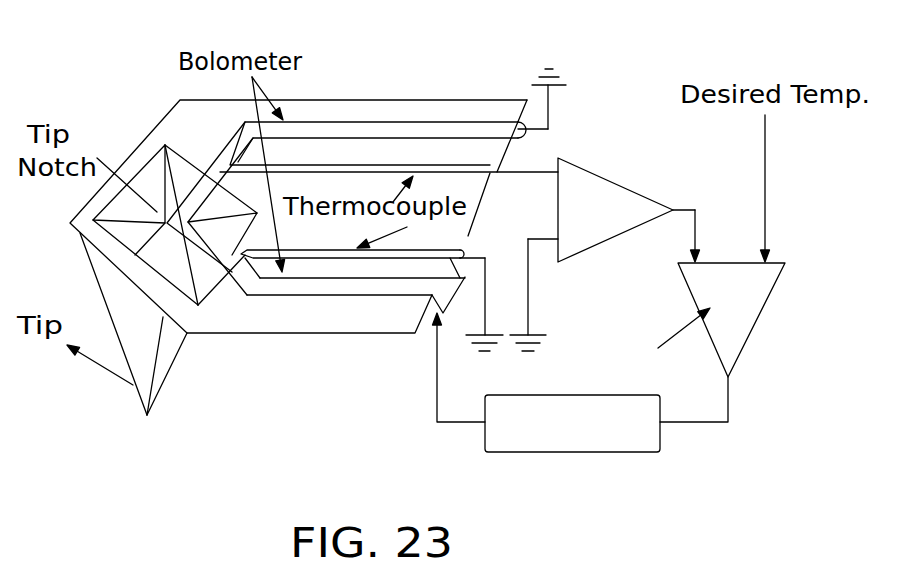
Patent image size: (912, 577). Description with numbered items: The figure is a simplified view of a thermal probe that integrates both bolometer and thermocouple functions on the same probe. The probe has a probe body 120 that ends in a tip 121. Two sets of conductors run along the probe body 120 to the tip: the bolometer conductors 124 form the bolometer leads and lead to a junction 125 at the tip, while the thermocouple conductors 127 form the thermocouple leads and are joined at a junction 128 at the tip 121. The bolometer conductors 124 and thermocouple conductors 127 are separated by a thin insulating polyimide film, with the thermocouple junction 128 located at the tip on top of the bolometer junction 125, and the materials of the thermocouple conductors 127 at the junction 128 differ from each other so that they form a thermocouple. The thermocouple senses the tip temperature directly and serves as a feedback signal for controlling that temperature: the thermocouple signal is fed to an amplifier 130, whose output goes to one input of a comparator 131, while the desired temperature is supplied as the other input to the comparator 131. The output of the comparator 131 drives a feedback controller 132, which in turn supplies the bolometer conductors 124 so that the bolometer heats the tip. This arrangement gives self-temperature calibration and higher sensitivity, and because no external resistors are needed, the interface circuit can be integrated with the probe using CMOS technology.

The probe body 120 is at (363, 99).
The tip 121 is at (162, 384).
The bolometer conductors 124 is at (407, 120).
The junction 125 is at (157, 200).
The thermocouple conductors 127 is at (462, 237).
The junction 128 is at (160, 224).
The amplifier 130 is at (608, 240).
The comparator 131 is at (740, 314).
The feedback controller 132 is at (590, 453).